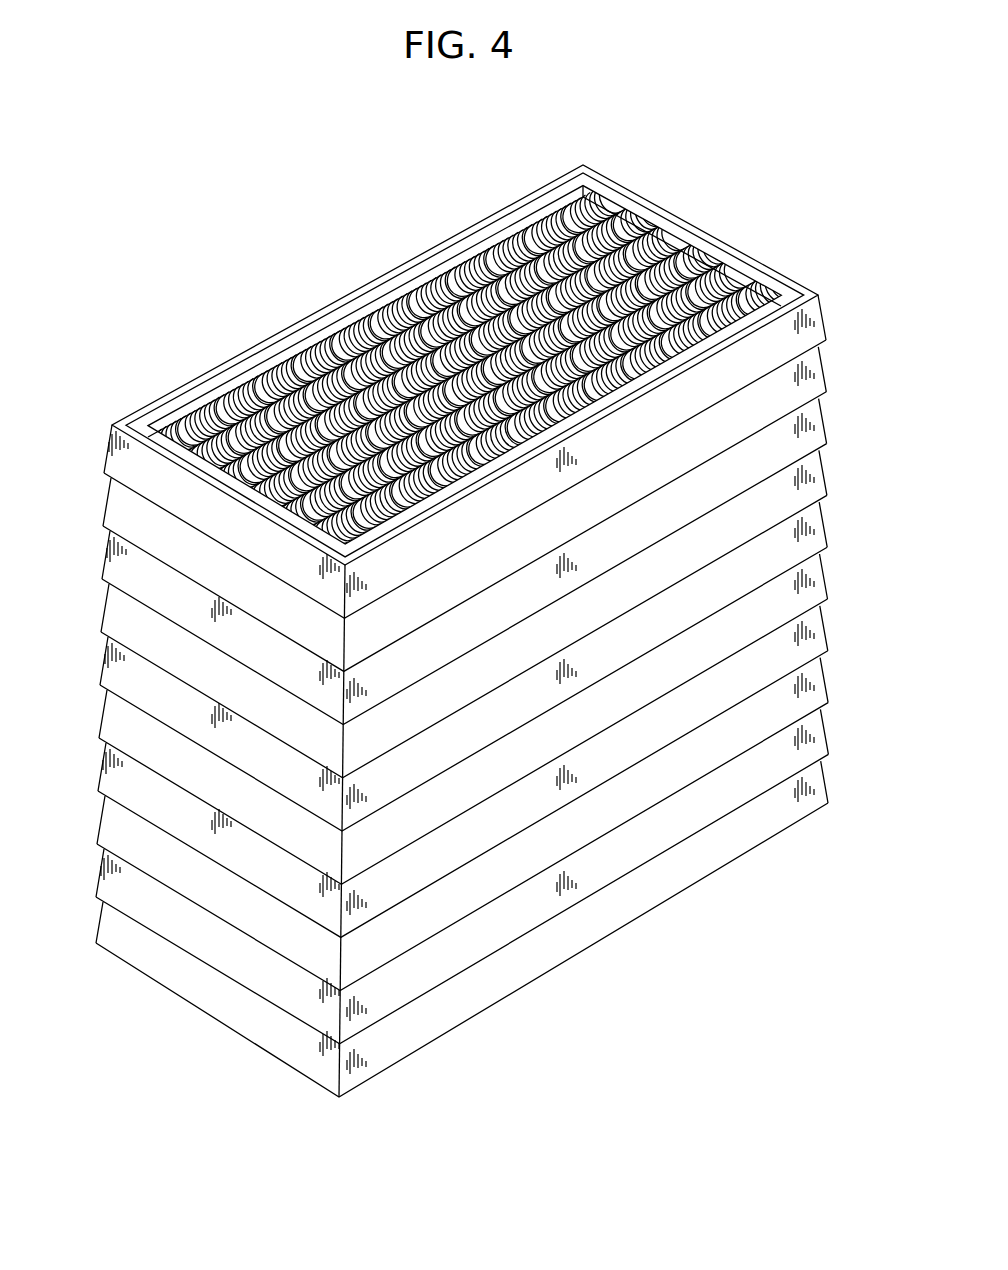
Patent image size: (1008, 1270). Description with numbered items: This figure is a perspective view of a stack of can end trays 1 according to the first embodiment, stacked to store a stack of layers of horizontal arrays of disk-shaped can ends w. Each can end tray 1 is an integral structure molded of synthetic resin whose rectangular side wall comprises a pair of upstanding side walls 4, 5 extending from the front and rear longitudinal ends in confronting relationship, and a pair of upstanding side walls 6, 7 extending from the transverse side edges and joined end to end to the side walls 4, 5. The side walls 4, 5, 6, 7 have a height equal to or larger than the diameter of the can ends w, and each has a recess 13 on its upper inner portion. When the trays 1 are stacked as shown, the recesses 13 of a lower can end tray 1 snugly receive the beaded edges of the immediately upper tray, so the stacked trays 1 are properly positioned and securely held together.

The can end tray 1 is at (480, 701).
The upstanding side wall 4 is at (462, 603).
The upstanding side wall 5 is at (268, 336).
The upstanding side wall 6 is at (286, 551).
The upstanding side wall 7 is at (461, 360).
The recess 13 is at (385, 296).
The can end w is at (597, 232).